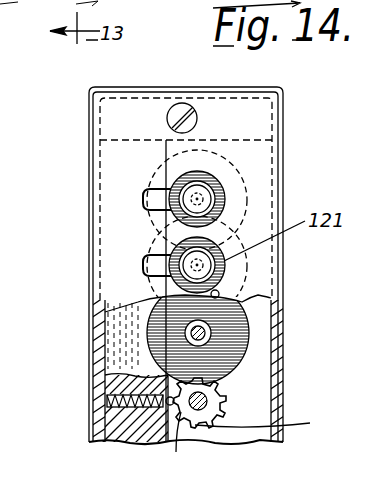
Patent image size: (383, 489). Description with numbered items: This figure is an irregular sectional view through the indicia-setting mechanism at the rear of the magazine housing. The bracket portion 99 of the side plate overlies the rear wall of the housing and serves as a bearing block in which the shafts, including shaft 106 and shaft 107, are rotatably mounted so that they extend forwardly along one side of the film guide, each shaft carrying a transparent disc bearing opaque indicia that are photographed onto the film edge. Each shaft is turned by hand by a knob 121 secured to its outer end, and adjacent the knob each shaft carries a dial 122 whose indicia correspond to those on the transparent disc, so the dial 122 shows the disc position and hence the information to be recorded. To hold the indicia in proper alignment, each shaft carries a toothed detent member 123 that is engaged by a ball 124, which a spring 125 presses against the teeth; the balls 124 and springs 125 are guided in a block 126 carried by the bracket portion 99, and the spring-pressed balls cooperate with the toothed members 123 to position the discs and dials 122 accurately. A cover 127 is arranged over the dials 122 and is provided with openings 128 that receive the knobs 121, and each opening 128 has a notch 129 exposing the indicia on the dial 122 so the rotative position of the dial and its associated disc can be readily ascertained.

The bracket portion 99 is at (265, 365).
The shaft 106 is at (222, 401).
The shaft 107 is at (207, 333).
The knob 121 is at (224, 197).
The dial 122 is at (220, 352).
The detent member 123 is at (274, 421).
The ball 124 is at (196, 443).
The spring 125 is at (142, 433).
The block 126 is at (100, 421).
The cover 127 is at (283, 190).
The opening 128 is at (172, 188).
The notch 129 is at (143, 282).